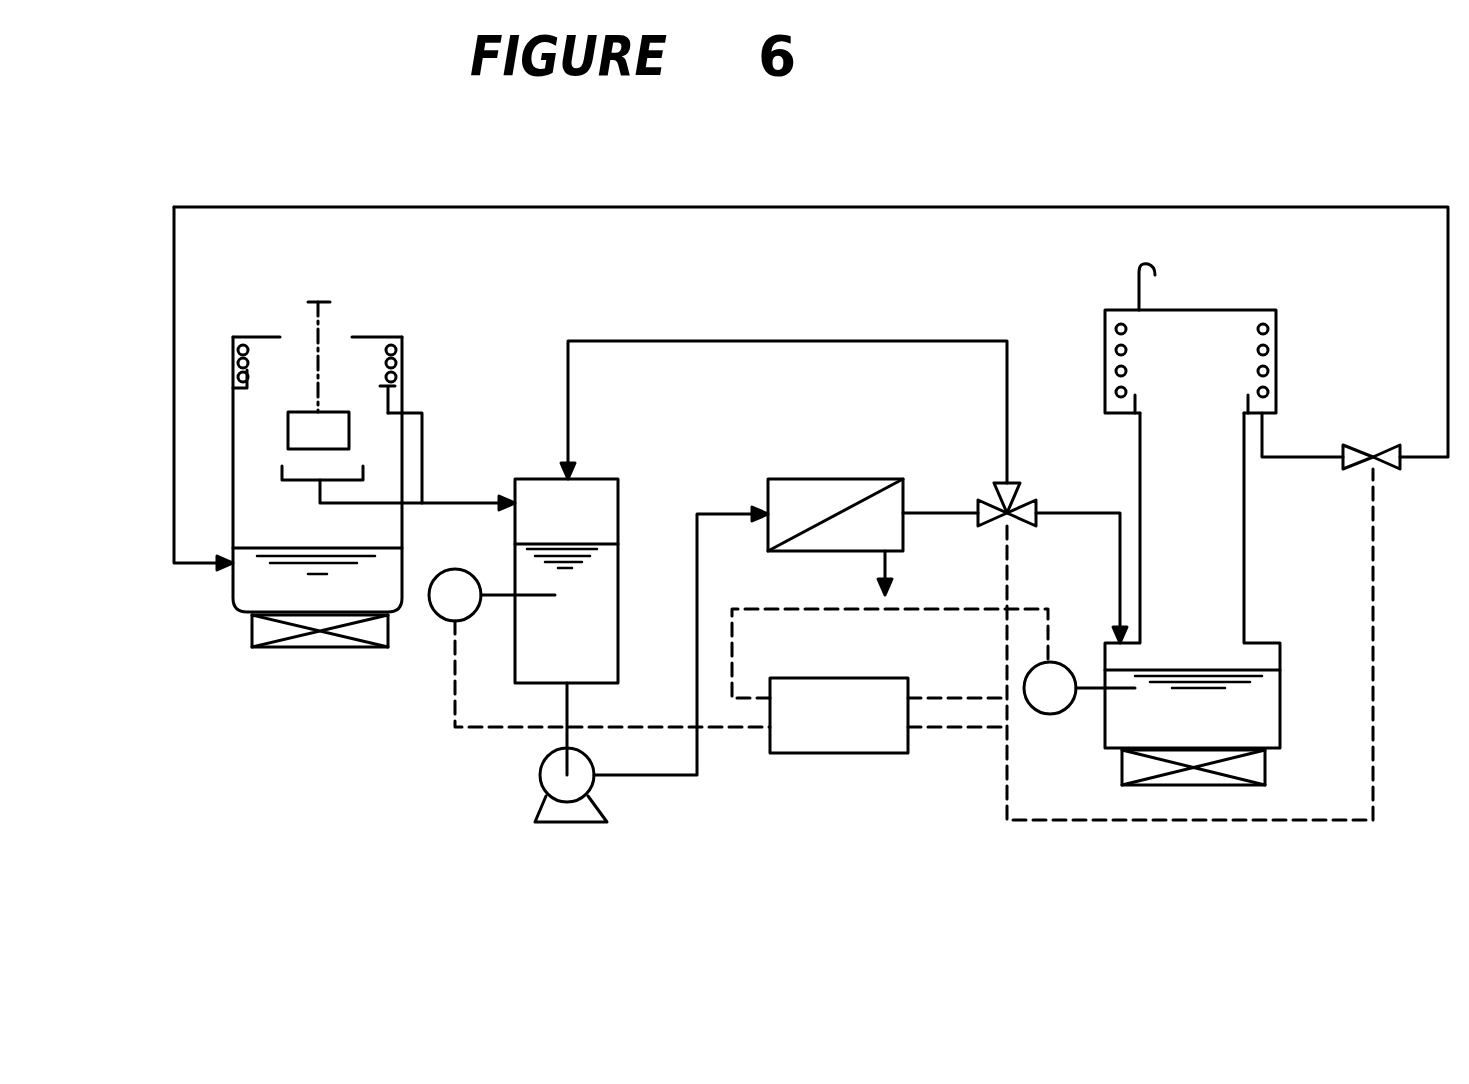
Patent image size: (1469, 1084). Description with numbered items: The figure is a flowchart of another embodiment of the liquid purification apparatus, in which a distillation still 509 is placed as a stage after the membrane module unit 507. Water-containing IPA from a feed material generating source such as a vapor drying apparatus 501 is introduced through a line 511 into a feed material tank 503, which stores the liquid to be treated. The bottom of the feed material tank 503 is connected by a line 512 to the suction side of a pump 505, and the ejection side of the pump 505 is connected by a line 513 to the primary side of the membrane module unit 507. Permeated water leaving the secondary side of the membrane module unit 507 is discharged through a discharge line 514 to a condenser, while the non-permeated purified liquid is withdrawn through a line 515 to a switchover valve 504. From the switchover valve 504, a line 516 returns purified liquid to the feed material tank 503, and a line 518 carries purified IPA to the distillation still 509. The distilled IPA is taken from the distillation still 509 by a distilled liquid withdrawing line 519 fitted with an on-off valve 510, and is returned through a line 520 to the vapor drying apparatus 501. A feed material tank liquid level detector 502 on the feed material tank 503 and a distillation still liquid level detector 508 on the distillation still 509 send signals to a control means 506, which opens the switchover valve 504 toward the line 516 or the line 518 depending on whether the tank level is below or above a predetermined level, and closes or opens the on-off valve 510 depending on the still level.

The vapor drying apparatus 501 is at (232, 598).
The feed material tank liquid level detector 502 is at (445, 619).
The feed material tank 503 is at (643, 453).
The switchover valve 504 is at (1018, 494).
The pump 505 is at (545, 821).
The control means 506 is at (836, 755).
The membrane module unit 507 is at (828, 479).
The distillation still liquid level detector 508 is at (1050, 715).
The distillation still 509 is at (1266, 310).
The on-off valve 510 is at (1373, 447).
The line 511 is at (475, 502).
The line 512 is at (550, 753).
The line 513 is at (697, 758).
The discharge line 514 is at (878, 566).
The line 515 is at (940, 511).
The line 516 is at (727, 341).
The line 518 is at (1120, 578).
The distilled liquid withdrawing line 519 is at (1296, 460).
The line 520 is at (735, 207).